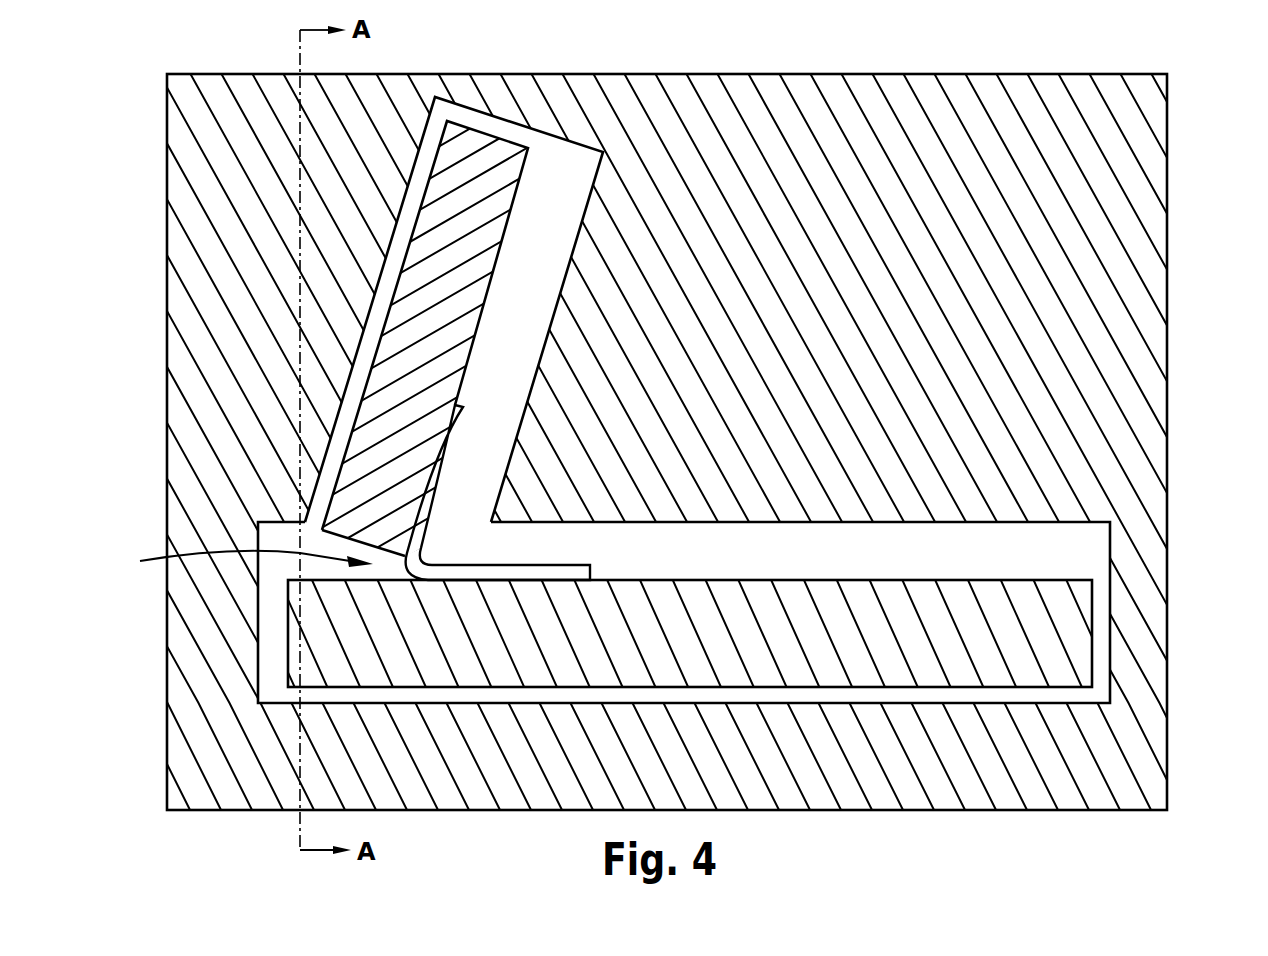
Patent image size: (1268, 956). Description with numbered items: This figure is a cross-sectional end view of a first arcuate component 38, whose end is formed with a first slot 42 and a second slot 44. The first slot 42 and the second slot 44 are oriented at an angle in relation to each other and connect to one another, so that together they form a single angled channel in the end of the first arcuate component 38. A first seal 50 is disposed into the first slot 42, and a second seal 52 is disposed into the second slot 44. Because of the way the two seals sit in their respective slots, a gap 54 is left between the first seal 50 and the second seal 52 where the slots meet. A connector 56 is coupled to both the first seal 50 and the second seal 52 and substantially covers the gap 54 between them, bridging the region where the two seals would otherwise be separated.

The first arcuate component 38 is at (1186, 128).
The first slot 42 is at (432, 137).
The second slot 44 is at (1110, 543).
The first seal 50 is at (472, 230).
The second seal 52 is at (1092, 618).
The gap 54 is at (239, 555).
The connector 56 is at (445, 478).